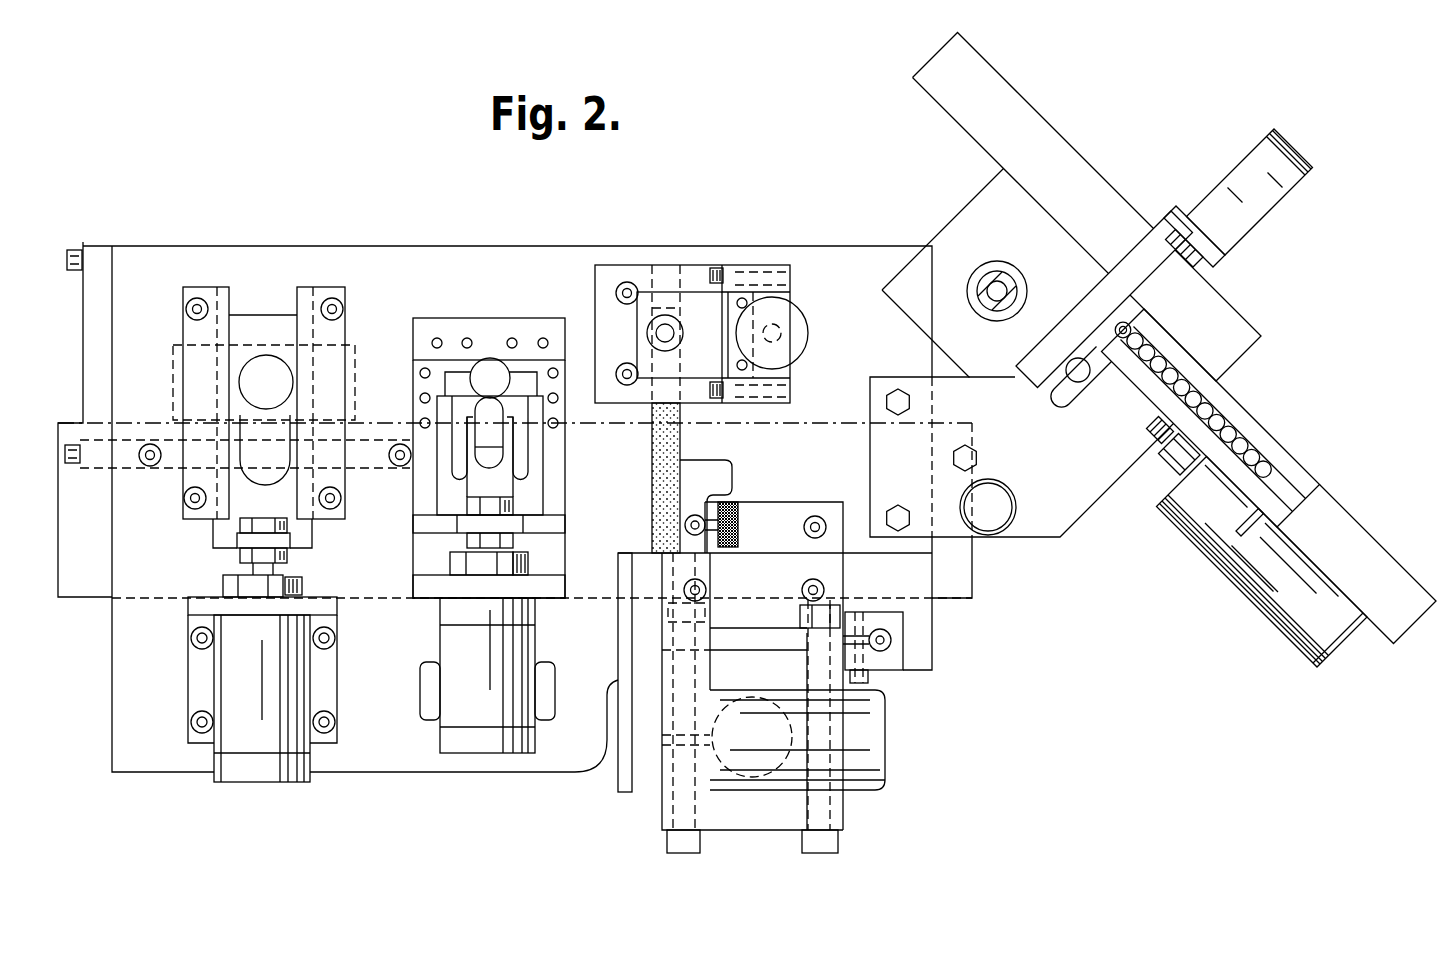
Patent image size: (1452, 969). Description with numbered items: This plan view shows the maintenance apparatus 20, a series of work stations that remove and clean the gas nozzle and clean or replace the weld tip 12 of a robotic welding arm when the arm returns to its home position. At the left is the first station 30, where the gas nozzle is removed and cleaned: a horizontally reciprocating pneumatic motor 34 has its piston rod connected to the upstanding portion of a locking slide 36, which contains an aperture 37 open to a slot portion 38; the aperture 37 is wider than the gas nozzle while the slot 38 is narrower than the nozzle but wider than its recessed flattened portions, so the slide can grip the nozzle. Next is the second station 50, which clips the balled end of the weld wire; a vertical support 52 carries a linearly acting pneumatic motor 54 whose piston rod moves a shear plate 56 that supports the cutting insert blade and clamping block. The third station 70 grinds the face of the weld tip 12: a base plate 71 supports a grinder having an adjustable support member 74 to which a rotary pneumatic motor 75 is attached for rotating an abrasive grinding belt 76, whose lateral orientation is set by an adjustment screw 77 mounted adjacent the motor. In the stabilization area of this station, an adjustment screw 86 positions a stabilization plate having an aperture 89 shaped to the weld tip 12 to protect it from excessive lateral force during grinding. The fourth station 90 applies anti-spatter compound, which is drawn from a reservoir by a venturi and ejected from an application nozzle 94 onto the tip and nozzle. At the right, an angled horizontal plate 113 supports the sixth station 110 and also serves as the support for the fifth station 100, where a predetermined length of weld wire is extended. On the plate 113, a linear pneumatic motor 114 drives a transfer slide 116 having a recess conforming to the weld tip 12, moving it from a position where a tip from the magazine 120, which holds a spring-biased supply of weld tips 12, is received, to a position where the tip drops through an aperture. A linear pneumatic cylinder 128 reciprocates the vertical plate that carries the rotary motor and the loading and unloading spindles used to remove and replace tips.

The weld tip 12 is at (1245, 442).
The maintenance apparatus 20 is at (160, 206).
The first station 30 is at (283, 206).
The pneumatic motor 34 is at (250, 768).
The locking slide 36 is at (228, 536).
The aperture 37 is at (240, 377).
The slot portion 38 is at (240, 445).
The second station 50 is at (484, 236).
The vertical support 52 is at (549, 588).
The linearly acting pneumatic motor 54 is at (488, 745).
The shear plate 56 is at (535, 494).
The third station 70 is at (712, 206).
The base plate 71 is at (838, 567).
The adjustable support member 74 is at (762, 820).
The rotary pneumatic motor 75 is at (868, 785).
The grinding belt 76 is at (660, 440).
The adjustment screw 77 is at (738, 528).
The adjustment screw 86 is at (805, 338).
The aperture 89 is at (683, 332).
The fourth station 90 is at (887, 675).
The application nozzle 94 is at (893, 640).
The fifth station 100 is at (985, 542).
The sixth station 110 is at (1244, 398).
The angled horizontal plate 113 is at (1065, 530).
The linear pneumatic motor 114 is at (1237, 177).
The transfer slide 116 is at (1150, 302).
The magazine 120 is at (1318, 520).
The linear pneumatic cylinder 128 is at (1258, 585).